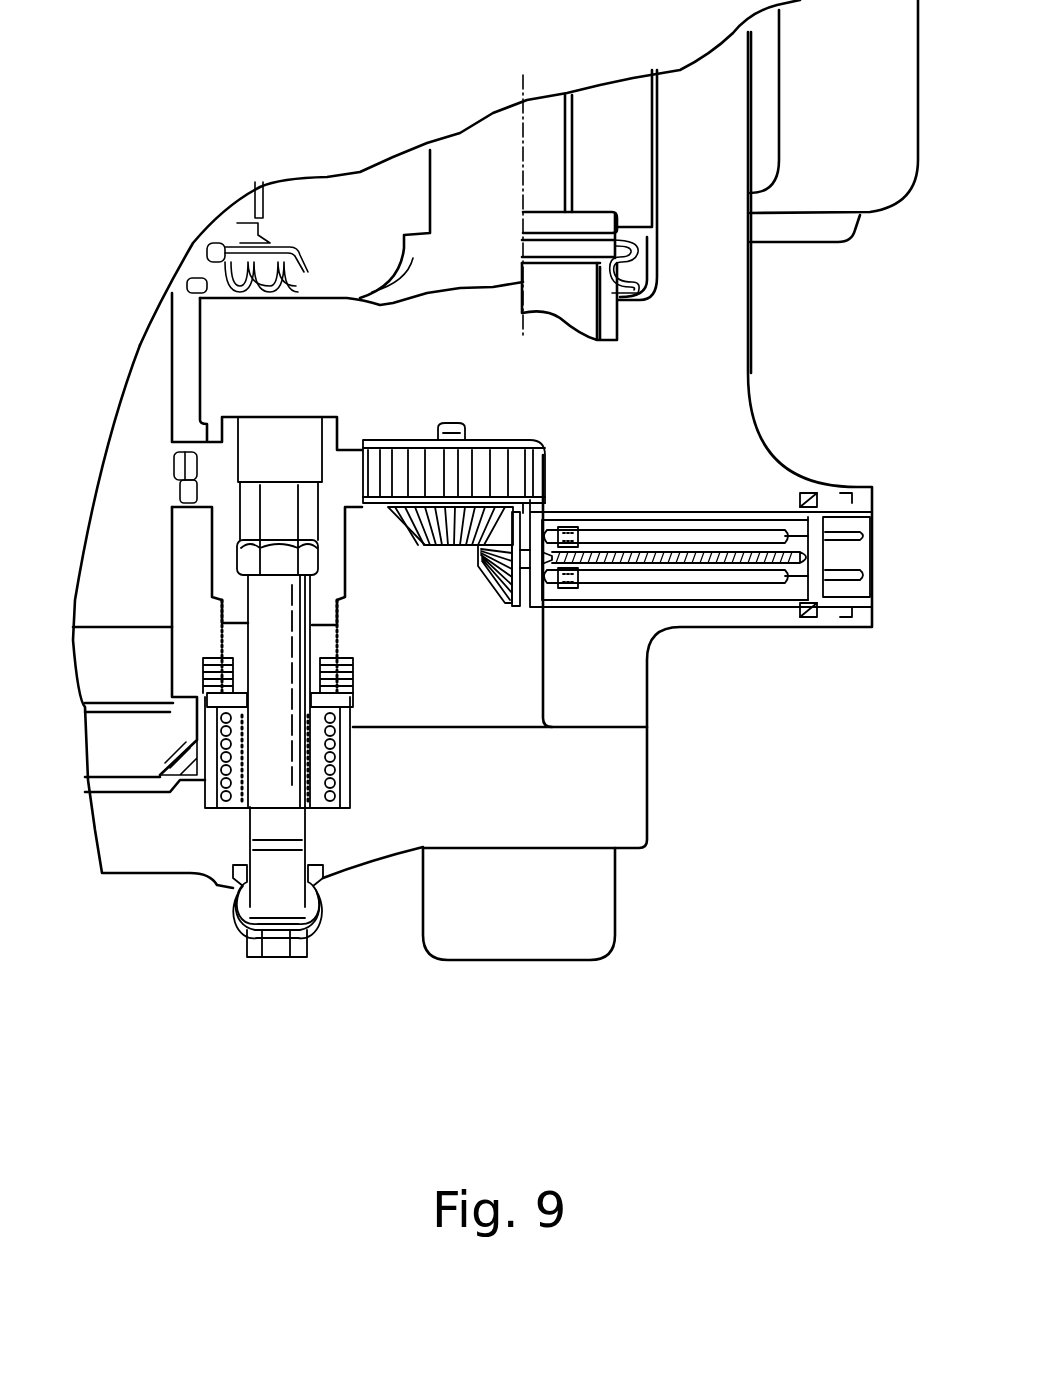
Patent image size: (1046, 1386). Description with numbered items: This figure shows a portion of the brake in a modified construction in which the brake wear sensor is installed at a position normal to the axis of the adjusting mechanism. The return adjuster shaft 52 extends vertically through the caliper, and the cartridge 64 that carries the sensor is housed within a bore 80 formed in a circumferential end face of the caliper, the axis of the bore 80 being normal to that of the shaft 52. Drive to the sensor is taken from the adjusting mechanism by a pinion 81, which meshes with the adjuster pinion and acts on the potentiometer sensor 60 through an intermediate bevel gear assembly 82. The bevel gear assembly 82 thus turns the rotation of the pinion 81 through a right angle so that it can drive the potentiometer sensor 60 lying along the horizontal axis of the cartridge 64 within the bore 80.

The return adjuster shaft 52 is at (277, 885).
The potentiometer sensor 60 is at (690, 530).
The cartridge 64 is at (735, 507).
The bore 80 is at (720, 605).
The pinion 81 is at (518, 470).
The intermediate bevel gear assembly 82 is at (450, 547).